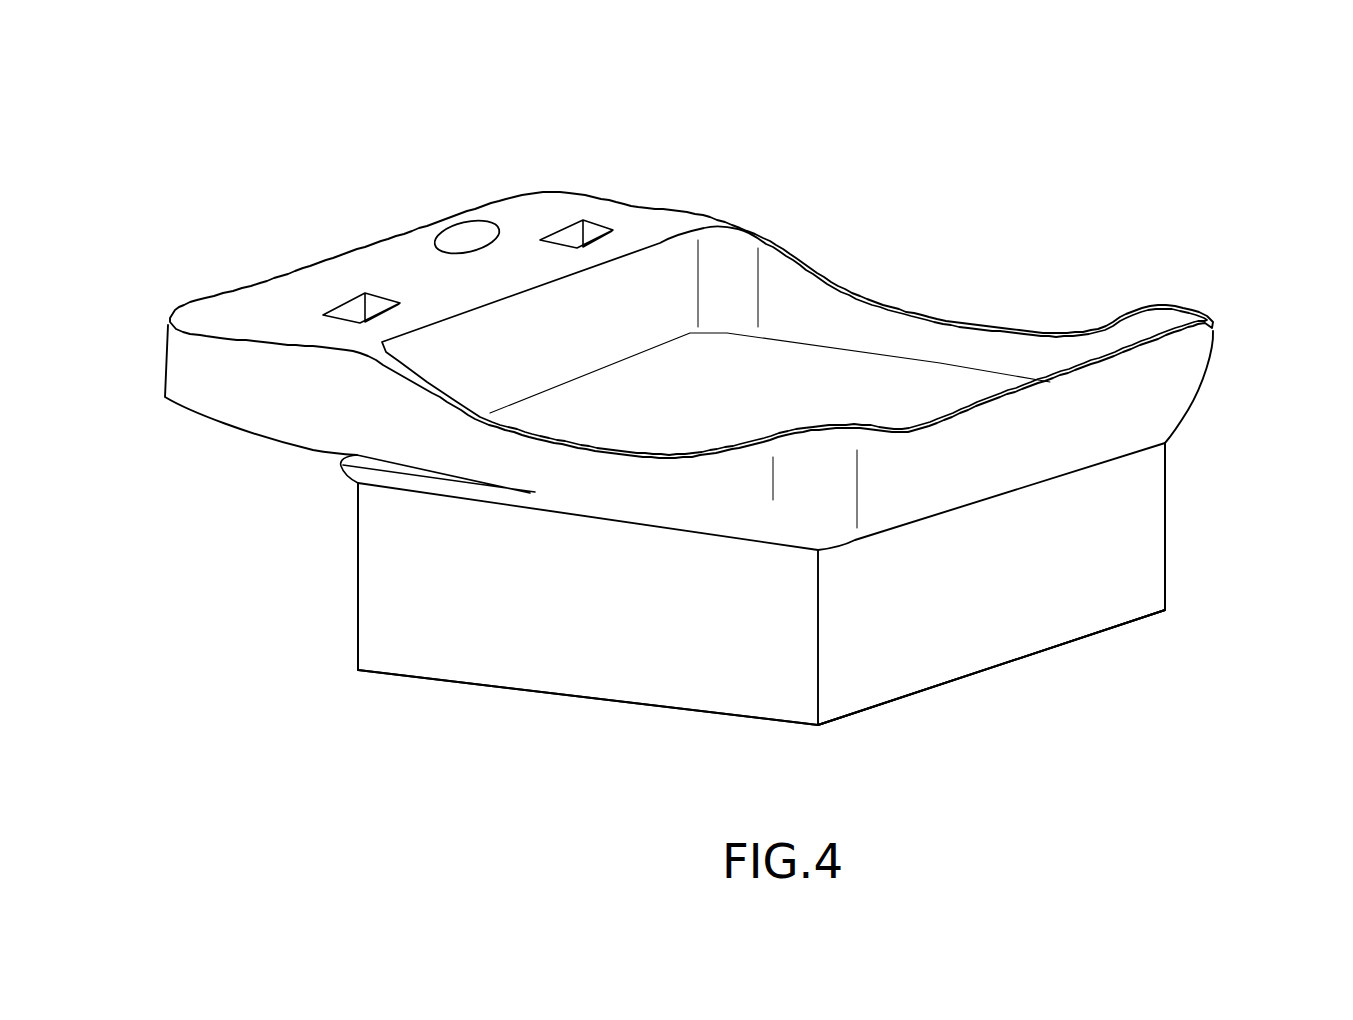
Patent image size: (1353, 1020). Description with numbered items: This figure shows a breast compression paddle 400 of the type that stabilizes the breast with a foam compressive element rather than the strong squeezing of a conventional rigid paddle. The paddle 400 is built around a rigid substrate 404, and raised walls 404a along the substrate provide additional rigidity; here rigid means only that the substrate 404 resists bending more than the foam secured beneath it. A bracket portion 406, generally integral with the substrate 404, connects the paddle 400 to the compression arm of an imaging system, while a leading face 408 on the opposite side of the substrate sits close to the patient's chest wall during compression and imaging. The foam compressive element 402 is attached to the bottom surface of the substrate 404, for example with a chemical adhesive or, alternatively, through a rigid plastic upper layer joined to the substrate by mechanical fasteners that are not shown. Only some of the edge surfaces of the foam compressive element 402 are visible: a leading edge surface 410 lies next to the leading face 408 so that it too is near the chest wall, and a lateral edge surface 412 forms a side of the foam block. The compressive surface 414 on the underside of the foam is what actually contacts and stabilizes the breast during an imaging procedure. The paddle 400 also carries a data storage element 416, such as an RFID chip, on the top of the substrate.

The breast compression paddle 400 is at (302, 178).
The foam compressive element 402 is at (755, 687).
The rigid substrate 404 is at (938, 318).
The raised walls 404a is at (648, 270).
The bracket portion 406 is at (163, 372).
The leading face 408 is at (1130, 427).
The leading edge surface 410 is at (1035, 604).
The lateral edge surface 412 is at (495, 650).
The compressive surface 414 is at (982, 678).
The data storage element 416 is at (457, 225).